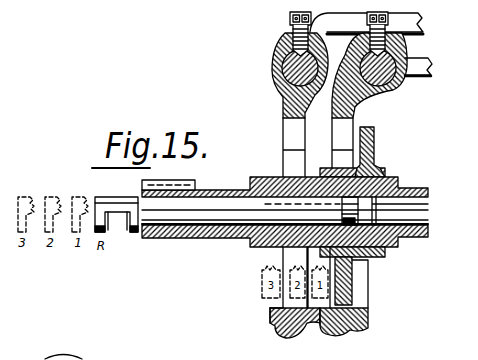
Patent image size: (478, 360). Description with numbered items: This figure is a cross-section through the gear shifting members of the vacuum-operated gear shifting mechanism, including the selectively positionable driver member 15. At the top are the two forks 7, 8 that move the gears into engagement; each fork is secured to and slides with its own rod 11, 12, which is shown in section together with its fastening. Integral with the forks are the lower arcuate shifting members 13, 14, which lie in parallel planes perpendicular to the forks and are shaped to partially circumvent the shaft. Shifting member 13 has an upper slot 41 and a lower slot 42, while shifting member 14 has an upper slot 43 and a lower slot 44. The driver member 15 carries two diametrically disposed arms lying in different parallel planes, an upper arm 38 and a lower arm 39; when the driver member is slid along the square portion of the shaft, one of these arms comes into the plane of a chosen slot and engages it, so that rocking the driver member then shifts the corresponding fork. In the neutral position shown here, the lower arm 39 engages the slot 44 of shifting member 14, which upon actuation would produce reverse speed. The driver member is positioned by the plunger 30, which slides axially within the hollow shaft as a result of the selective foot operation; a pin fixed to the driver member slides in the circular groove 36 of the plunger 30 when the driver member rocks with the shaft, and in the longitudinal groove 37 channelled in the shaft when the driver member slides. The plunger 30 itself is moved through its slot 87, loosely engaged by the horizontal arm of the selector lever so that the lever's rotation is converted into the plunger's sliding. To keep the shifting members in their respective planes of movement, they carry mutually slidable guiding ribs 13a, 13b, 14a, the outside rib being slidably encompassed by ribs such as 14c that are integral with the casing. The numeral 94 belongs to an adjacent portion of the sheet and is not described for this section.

The fork 7 is at (355, 13).
The fork 8 is at (422, 80).
The rod 11 is at (400, 56).
The rod 12 is at (326, 57).
The shifting member 13 is at (282, 97).
The guiding rib 13a is at (272, 330).
The guiding rib 13b is at (313, 339).
The shifting member 14 is at (356, 110).
The guiding rib 14a is at (325, 335).
The rib 14c is at (362, 334).
The driver member 15 is at (386, 172).
The plunger 30 is at (196, 228).
The circular groove 36 is at (376, 254).
The longitudinal groove 37 is at (428, 214).
The upper arm 38 is at (374, 141).
The lower arm 39 is at (353, 294).
The upper slot 41 is at (283, 138).
The lower slot 42 is at (286, 303).
The upper slot 43 is at (333, 141).
The lower slot 44 is at (348, 290).
The slot 87 is at (122, 233).
The fragment 94 is at (66, 355).